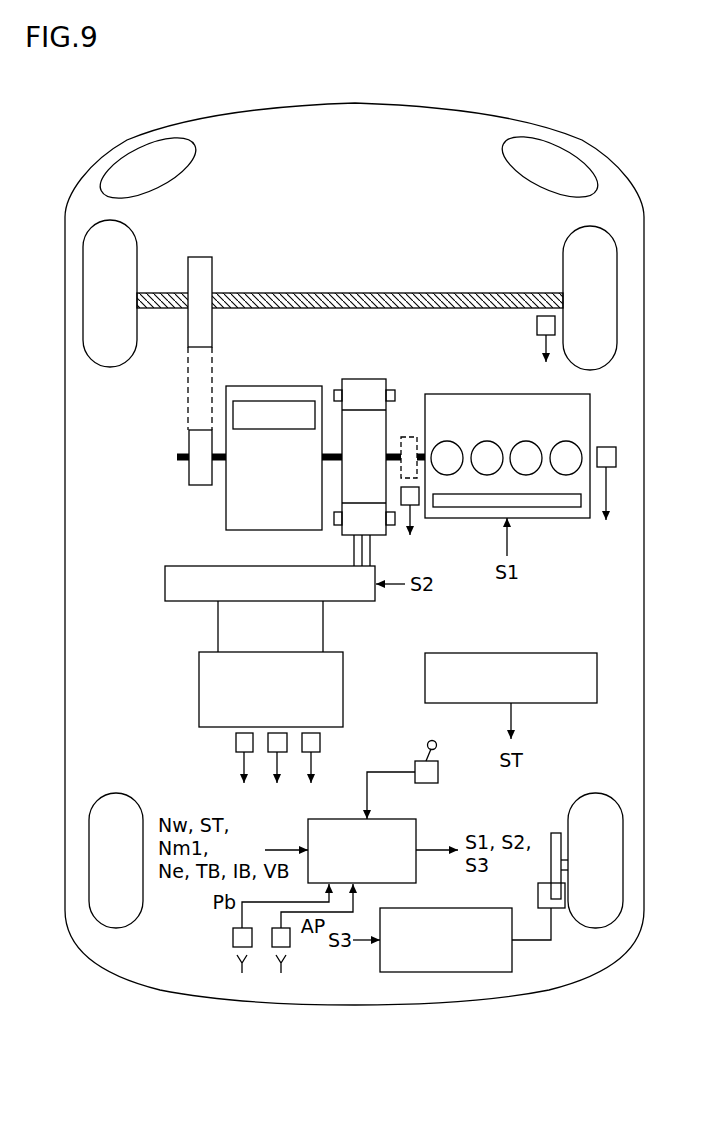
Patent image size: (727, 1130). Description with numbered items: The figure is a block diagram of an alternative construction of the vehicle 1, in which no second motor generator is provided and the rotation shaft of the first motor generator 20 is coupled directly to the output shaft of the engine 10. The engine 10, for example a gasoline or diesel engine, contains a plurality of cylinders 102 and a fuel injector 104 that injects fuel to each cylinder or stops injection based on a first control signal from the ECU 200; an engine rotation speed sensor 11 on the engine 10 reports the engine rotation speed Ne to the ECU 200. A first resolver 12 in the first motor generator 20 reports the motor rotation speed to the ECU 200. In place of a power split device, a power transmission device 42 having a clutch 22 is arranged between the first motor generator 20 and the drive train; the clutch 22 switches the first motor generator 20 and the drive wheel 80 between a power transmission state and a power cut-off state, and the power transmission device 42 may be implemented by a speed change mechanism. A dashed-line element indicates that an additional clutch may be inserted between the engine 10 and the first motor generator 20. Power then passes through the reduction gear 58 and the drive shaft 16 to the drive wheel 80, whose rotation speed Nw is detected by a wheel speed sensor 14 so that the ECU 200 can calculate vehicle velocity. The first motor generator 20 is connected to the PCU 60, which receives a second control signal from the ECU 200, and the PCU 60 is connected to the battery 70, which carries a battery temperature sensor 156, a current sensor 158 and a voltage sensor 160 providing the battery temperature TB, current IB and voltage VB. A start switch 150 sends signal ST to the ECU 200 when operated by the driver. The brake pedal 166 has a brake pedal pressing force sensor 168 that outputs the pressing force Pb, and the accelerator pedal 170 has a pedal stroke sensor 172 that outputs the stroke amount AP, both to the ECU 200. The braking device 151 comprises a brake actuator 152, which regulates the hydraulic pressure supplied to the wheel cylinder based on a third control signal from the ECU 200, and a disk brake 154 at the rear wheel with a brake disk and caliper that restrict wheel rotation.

The vehicle 1 is at (325, 76).
The engine 10 is at (450, 394).
The engine rotation speed sensor 11 is at (606, 447).
The first resolver 12 is at (419, 508).
The wheel speed sensor 14 is at (537, 325).
The drive shaft 16 is at (180, 462).
The first motor generator 20 is at (362, 379).
The clutch 22 is at (254, 401).
The power transmission device 42 is at (296, 386).
The reduction gear 58 is at (202, 257).
The PCU 60 is at (165, 584).
The battery 70 is at (199, 688).
The drive wheel 80 is at (573, 234).
The cylinders 102 is at (526, 441).
The fuel injector 104 is at (545, 507).
The start switch 150 is at (552, 653).
The braking device 151 is at (540, 850).
The brake actuator 152 is at (470, 908).
The disk brake 154 is at (561, 914).
The battery temperature sensor 156 is at (236, 741).
The current sensor 158 is at (278, 733).
The voltage sensor 160 is at (320, 742).
The brake pedal 166 is at (244, 968).
The brake pedal pressing force sensor 168 is at (233, 934).
The accelerator pedal 170 is at (283, 968).
The pedal stroke sensor 172 is at (292, 934).
The ECU 200 is at (385, 819).